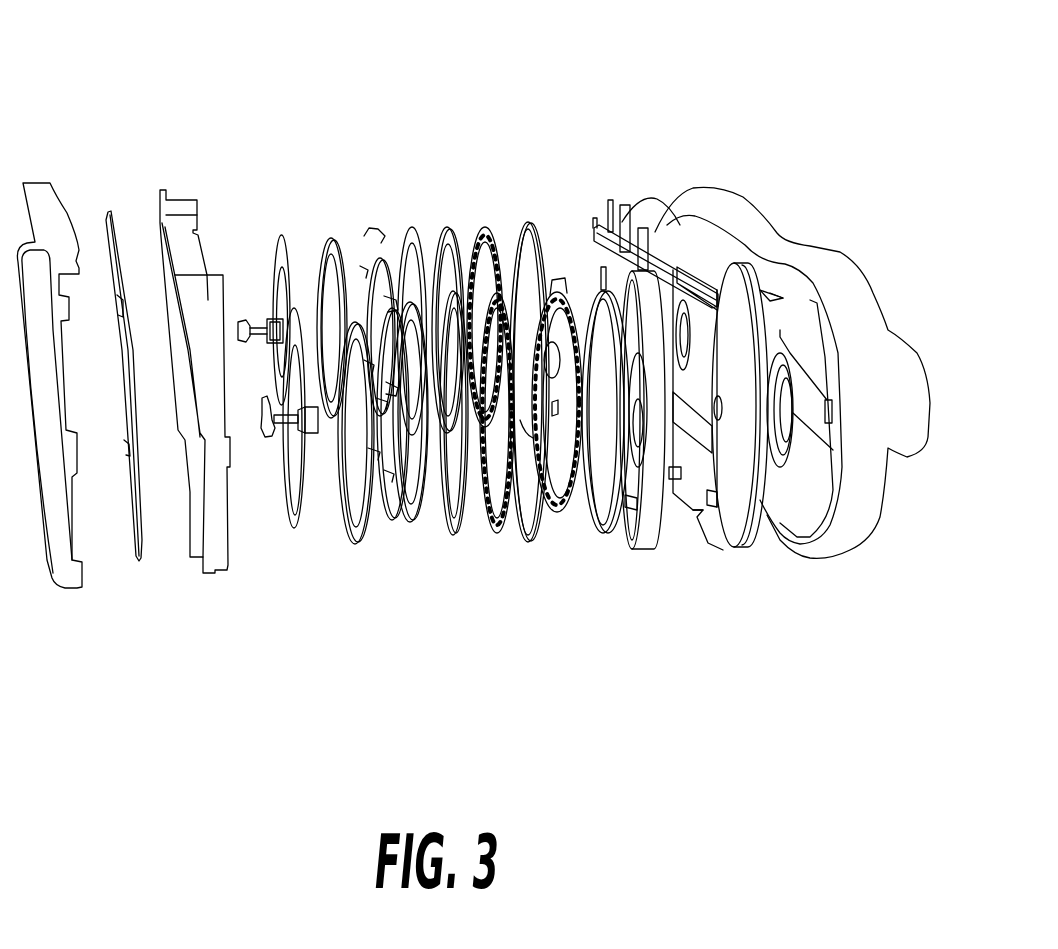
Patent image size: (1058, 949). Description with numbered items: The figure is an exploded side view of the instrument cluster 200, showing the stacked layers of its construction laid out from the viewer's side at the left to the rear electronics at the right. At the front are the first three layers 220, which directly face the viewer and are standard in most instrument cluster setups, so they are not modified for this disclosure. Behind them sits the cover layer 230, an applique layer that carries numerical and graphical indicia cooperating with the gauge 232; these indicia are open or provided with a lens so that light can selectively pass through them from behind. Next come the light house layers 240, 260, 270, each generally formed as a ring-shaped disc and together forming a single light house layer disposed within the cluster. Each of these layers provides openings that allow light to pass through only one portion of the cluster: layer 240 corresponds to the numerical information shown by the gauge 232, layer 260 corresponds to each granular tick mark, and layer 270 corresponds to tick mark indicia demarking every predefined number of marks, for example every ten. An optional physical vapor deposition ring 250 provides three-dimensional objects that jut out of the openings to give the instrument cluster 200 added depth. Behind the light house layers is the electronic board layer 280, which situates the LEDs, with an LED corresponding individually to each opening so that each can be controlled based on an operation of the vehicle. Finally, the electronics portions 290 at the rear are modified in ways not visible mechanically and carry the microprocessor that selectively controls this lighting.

The instrument cluster 200 is at (365, 118).
The first three layers 220 is at (242, 612).
The cover layer 230 is at (295, 528).
The gauge 232 is at (262, 452).
The light house layer 240 is at (352, 544).
The physical vapor deposition ring 250 is at (408, 522).
The light house layer 260 is at (456, 540).
The light house layer 270 is at (497, 540).
The electronic board layer 280 is at (555, 520).
The electronics portions 290 is at (935, 603).